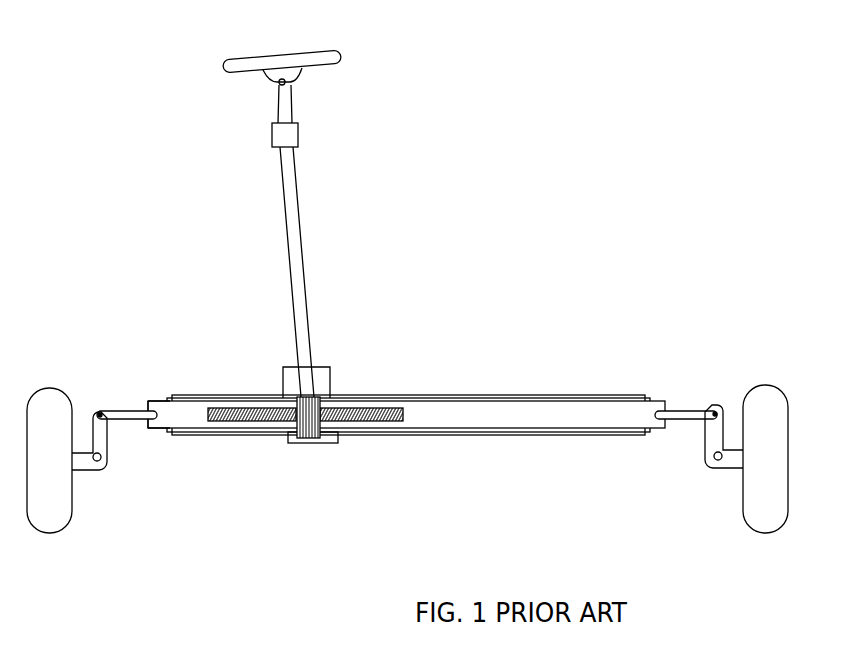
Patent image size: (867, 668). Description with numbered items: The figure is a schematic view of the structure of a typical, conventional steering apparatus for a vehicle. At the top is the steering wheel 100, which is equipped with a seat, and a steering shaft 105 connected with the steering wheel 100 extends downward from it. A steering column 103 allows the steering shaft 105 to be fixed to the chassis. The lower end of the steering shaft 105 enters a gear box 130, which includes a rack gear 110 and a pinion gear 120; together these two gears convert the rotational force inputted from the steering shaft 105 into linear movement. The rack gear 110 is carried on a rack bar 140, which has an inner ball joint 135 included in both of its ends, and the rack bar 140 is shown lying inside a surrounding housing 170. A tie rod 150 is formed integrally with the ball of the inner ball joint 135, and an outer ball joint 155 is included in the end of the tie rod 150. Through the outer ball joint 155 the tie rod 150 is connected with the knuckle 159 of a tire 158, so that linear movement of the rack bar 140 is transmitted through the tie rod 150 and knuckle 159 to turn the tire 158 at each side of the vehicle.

The steering wheel 100 is at (332, 55).
The steering column 103 is at (300, 133).
The steering shaft 105 is at (297, 222).
The rack gear 110 is at (398, 427).
The pinion gear 120 is at (294, 443).
The gear box 130 is at (330, 378).
The inner ball joint 135 is at (157, 402).
The rack bar 140 is at (552, 420).
The tie rod 150 is at (132, 411).
The outer ball joint 155 is at (100, 412).
The tire 158 is at (47, 388).
The knuckle 159 is at (108, 437).
The rack housing 170 is at (487, 395).